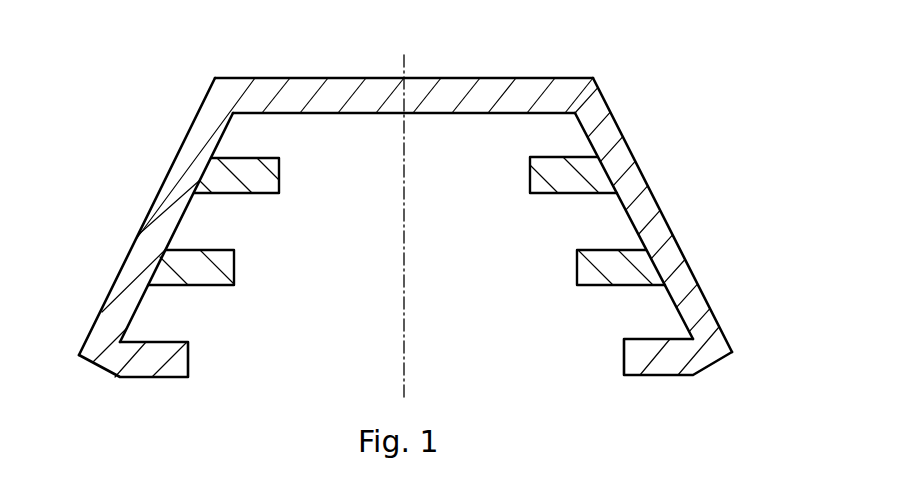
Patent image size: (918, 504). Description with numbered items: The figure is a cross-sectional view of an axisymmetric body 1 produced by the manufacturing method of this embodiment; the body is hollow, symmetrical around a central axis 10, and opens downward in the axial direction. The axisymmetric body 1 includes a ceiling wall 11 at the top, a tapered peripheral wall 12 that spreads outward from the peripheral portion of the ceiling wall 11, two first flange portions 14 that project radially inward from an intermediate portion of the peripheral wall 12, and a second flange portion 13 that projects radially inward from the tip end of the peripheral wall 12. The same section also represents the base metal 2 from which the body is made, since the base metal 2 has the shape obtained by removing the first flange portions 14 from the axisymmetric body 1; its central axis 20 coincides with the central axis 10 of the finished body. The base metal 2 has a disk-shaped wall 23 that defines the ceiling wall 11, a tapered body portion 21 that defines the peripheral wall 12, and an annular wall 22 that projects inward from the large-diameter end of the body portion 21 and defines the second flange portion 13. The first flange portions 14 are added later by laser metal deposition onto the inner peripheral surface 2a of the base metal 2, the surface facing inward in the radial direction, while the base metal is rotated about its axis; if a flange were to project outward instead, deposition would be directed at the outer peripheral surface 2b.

The axisymmetric body 1 is at (415, 207).
The base metal 2 is at (171, 237).
The inner peripheral surface 2a is at (143, 298).
The outer peripheral surface 2b is at (163, 181).
The central axis 10 is at (475, 233).
The ceiling wall 11 is at (463, 97).
The peripheral wall 12 is at (663, 245).
The second flange portion 13 is at (625, 357).
The first flange portions 14 is at (577, 265).
The central axis 20 is at (405, 373).
The body portion 21 is at (170, 220).
The annular wall 22 is at (177, 360).
The disk-shaped wall 23 is at (404, 57).